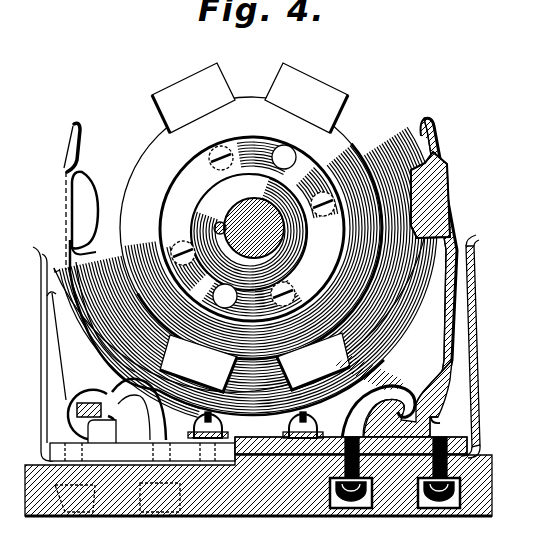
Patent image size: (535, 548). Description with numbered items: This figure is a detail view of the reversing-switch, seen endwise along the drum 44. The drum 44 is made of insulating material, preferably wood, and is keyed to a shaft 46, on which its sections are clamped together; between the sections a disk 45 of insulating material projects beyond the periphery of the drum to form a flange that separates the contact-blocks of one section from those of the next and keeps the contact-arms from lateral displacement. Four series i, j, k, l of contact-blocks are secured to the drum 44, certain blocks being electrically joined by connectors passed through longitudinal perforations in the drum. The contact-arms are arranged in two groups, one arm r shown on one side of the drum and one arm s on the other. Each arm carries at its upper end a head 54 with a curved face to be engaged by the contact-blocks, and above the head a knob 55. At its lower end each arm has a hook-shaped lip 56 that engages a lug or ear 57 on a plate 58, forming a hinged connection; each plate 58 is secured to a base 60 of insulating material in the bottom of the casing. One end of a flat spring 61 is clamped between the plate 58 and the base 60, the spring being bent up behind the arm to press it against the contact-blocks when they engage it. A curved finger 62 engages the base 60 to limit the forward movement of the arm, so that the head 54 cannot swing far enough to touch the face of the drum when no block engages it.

The drum 44 is at (243, 231).
The disk 45 is at (251, 228).
The shaft 46 is at (249, 218).
The head 54 is at (70, 202).
The knob 55 is at (81, 122).
The hook-shaped lip 56 is at (92, 427).
The lug or ear 57 is at (99, 393).
The plate 58 is at (258, 449).
The base 60 is at (218, 510).
The flat spring 61 is at (42, 336).
The curved finger 62 is at (282, 405).
The series of contact-blocks i is at (193, 95).
The series of contact-blocks j is at (306, 95).
The series of contact-blocks k is at (313, 361).
The series of contact-blocks l is at (198, 363).
The contact-arm r is at (102, 258).
The contact-arm s is at (440, 267).